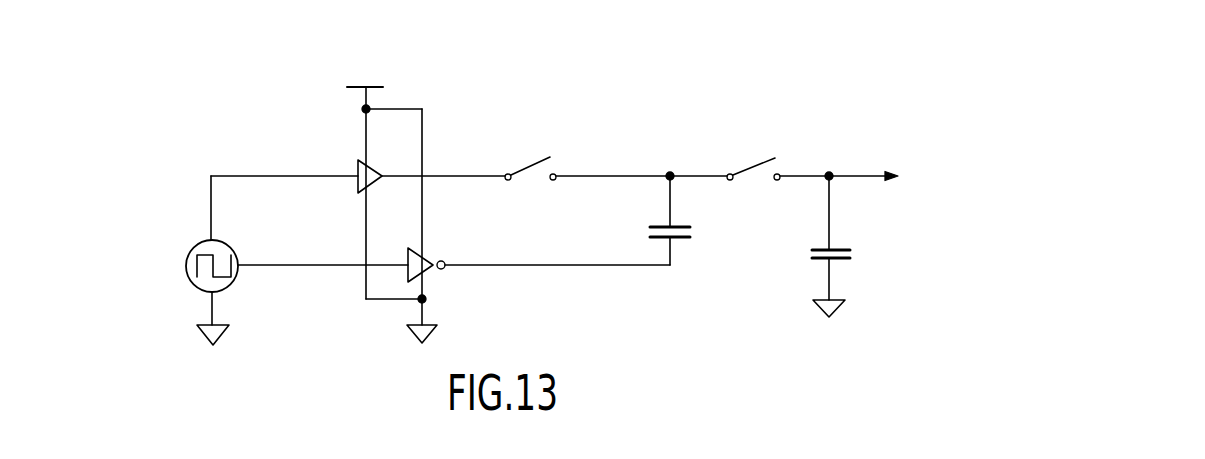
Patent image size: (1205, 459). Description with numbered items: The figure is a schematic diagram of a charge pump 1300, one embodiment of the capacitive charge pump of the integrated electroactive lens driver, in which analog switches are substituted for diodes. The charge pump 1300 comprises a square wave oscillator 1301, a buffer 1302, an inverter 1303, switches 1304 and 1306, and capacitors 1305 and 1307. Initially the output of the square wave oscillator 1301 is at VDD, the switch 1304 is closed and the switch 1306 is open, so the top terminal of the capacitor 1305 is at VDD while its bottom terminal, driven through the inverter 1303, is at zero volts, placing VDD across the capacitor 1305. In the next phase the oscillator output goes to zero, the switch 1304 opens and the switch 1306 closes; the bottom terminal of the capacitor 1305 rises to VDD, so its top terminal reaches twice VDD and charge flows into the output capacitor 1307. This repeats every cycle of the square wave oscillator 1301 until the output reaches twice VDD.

The charge pump 1300 is at (184, 67).
The square wave oscillator 1301 is at (186, 263).
The buffer 1302 is at (357, 164).
The inverter 1303 is at (446, 270).
The switch 1304 is at (530, 163).
The capacitor 1305 is at (684, 233).
The switch 1306 is at (752, 167).
The output capacitor 1307 is at (850, 255).